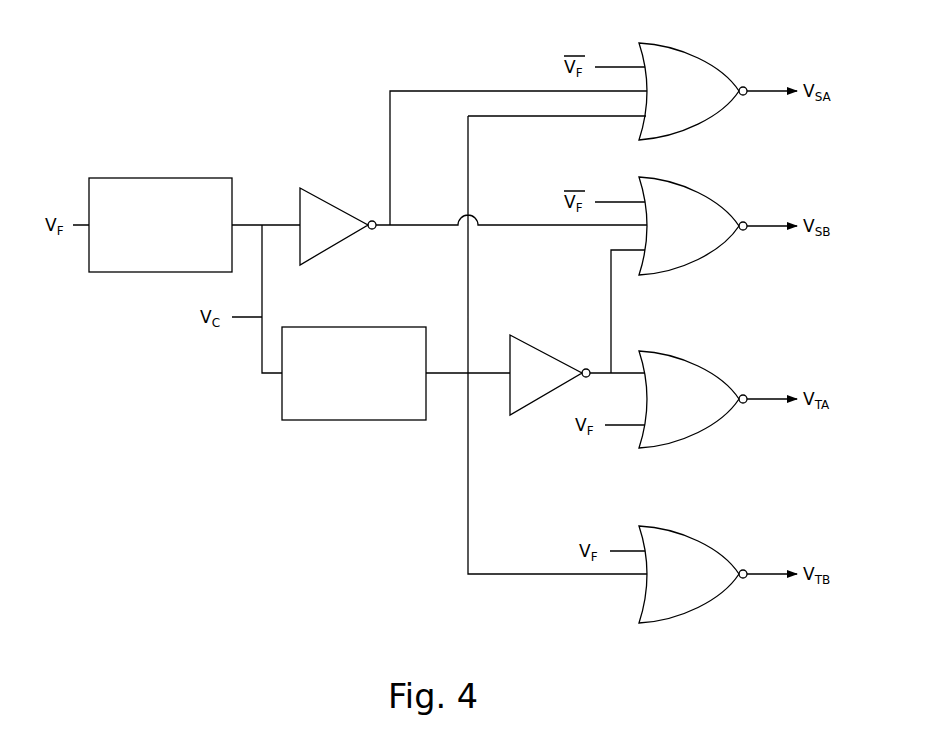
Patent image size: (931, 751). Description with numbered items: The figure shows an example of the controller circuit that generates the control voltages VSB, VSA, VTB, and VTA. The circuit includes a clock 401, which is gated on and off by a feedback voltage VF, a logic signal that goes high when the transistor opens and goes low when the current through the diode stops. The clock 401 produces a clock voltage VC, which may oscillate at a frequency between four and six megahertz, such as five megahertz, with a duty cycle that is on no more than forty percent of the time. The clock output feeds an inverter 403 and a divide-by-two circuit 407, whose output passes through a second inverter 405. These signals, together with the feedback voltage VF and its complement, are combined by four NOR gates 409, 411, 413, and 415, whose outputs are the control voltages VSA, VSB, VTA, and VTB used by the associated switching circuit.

The clock 401 is at (166, 178).
The inverter 403 is at (340, 207).
The inverter 405 is at (553, 353).
The divide-by-two circuit 407 is at (353, 327).
The NOR gate 409 is at (667, 47).
The NOR gate 411 is at (678, 185).
The NOR gate 413 is at (695, 365).
The NOR gate 415 is at (685, 535).